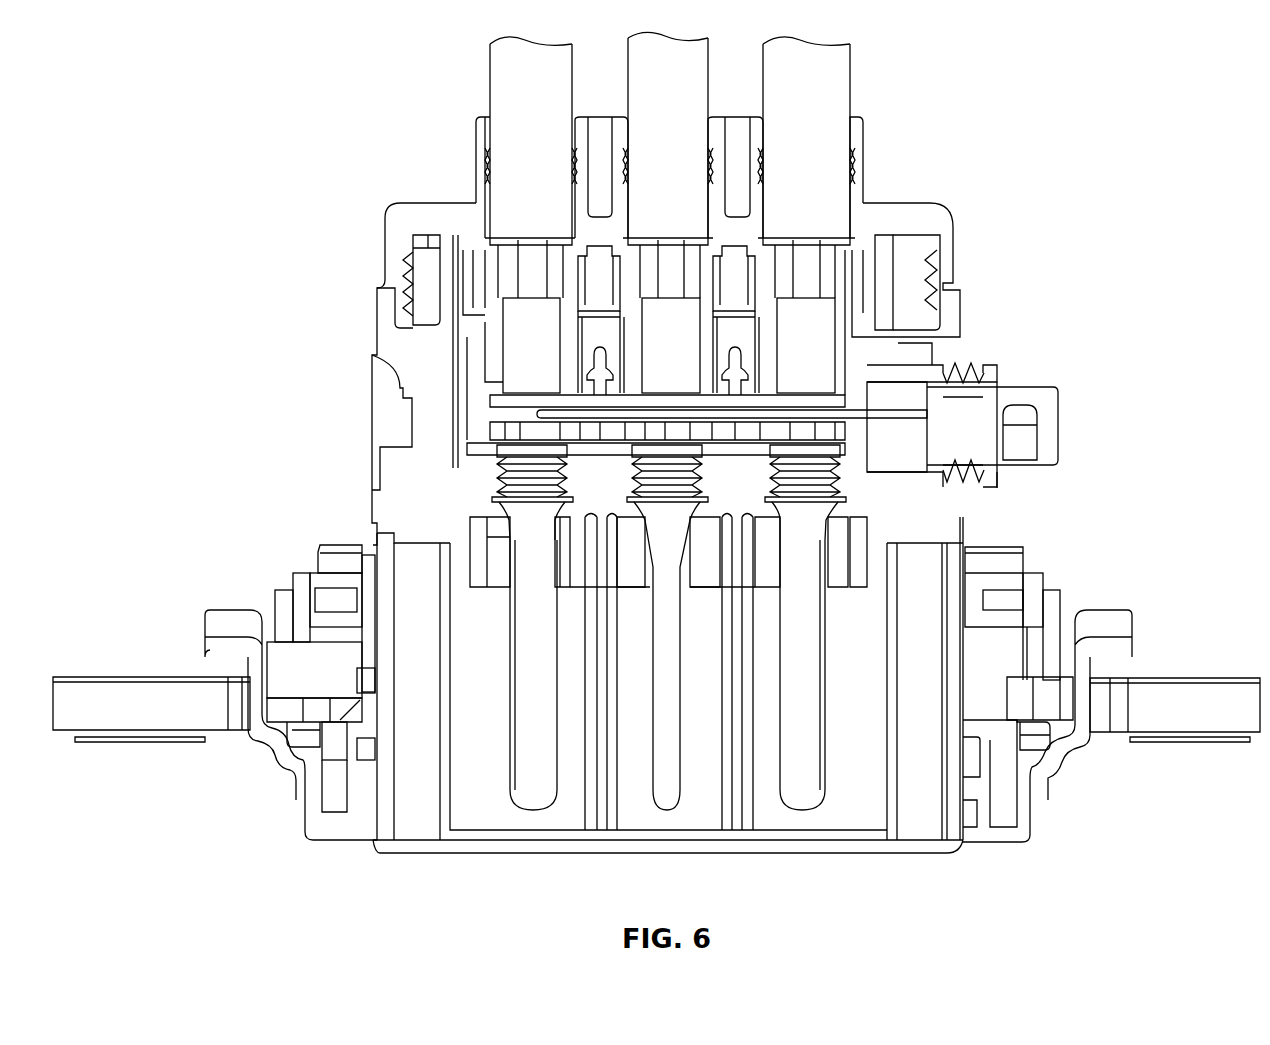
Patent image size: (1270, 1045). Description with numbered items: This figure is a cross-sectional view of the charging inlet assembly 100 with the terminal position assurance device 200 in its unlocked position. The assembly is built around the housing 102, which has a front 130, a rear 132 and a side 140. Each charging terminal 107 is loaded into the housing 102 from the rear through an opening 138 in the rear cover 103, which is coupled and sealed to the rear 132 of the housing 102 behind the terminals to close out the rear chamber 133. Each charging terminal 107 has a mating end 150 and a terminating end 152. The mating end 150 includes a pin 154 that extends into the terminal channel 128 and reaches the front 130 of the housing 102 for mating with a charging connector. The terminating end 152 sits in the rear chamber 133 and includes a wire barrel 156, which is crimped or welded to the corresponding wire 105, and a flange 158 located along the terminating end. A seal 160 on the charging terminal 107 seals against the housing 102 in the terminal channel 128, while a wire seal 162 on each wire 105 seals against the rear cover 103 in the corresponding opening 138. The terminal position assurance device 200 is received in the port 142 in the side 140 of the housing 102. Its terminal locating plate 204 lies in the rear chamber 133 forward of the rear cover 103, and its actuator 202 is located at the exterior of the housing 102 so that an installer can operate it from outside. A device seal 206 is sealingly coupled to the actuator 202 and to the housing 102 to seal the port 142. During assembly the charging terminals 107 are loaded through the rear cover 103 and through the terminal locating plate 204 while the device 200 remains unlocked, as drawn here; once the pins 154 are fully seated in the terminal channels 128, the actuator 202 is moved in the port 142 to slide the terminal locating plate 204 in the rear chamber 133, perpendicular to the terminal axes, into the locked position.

The charging inlet assembly 100 is at (1081, 213).
The housing 102 is at (1035, 795).
The rear cover 103 is at (920, 220).
The wire 105 is at (832, 72).
The charging terminal 107 is at (810, 745).
The terminal channel 128 is at (765, 792).
The front 130 is at (935, 855).
The rear 132 is at (884, 236).
The rear chamber 133 is at (866, 344).
The opening 138 is at (853, 115).
The side 140 is at (960, 523).
The port 142 is at (983, 379).
The mating end 150 is at (516, 790).
The terminating end 152 is at (522, 320).
The pin 154 is at (520, 735).
The wire barrel 156 is at (522, 373).
The flange 158 is at (470, 448).
The seal 160 is at (495, 468).
The wire seal 162 is at (858, 152).
The terminal position assurance device 200 is at (1062, 425).
The actuator 202 is at (1040, 395).
The terminal locating plate 204 is at (850, 430).
The device seal 206 is at (965, 480).